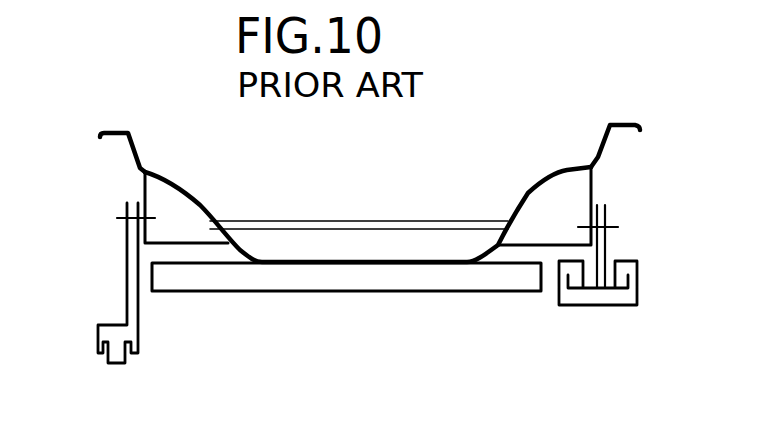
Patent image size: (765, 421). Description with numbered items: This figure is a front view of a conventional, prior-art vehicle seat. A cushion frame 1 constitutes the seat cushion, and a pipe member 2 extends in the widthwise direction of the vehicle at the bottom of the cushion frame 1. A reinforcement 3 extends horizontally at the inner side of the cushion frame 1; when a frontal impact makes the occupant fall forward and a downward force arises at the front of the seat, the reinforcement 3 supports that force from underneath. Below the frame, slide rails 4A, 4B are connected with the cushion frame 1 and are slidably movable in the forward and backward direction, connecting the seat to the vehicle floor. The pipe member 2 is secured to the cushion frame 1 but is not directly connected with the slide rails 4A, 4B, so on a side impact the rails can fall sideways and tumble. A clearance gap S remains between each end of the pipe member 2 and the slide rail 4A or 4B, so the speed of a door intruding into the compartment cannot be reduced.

The cushion frame 1 is at (190, 192).
The pipe member 2 is at (359, 283).
The reinforcement 3 is at (392, 218).
The clearance gap S is at (145, 287).
The slide rail 4A is at (600, 305).
The slide rail 4B is at (103, 360).